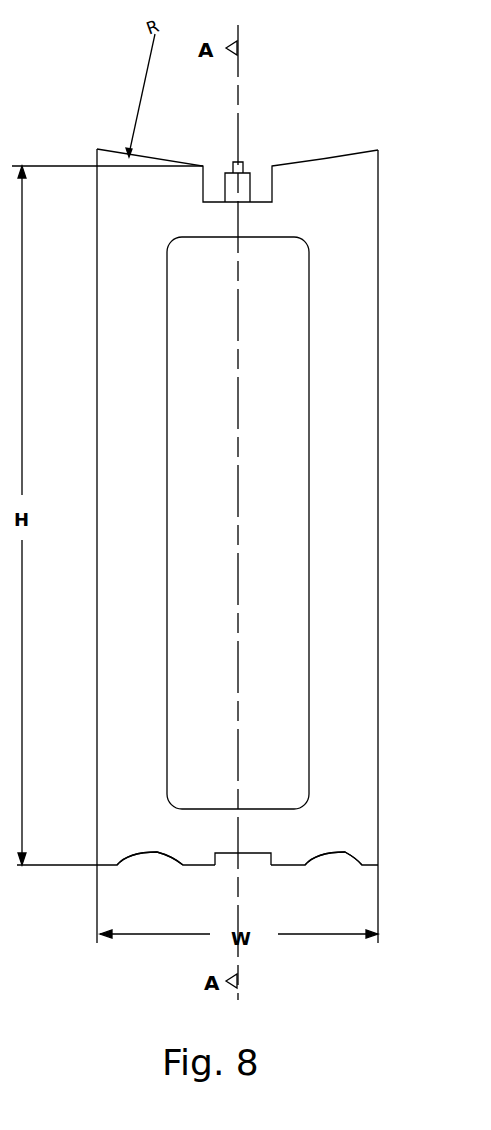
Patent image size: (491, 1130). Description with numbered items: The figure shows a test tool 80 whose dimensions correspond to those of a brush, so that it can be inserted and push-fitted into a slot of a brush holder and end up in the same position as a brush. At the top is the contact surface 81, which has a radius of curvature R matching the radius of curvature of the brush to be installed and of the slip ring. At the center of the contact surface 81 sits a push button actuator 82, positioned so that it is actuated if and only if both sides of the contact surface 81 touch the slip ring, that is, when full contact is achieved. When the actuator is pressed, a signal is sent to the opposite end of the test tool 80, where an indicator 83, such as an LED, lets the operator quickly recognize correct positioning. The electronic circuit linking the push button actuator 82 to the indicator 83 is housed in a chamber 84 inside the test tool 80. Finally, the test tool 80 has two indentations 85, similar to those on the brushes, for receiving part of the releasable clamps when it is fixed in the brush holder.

The test tool 80 is at (63, 88).
The contact surface 81 is at (334, 155).
The push button actuator 82 is at (250, 175).
The indicator 83 is at (258, 866).
The chamber 84 is at (310, 430).
The indentations 85 is at (158, 852).